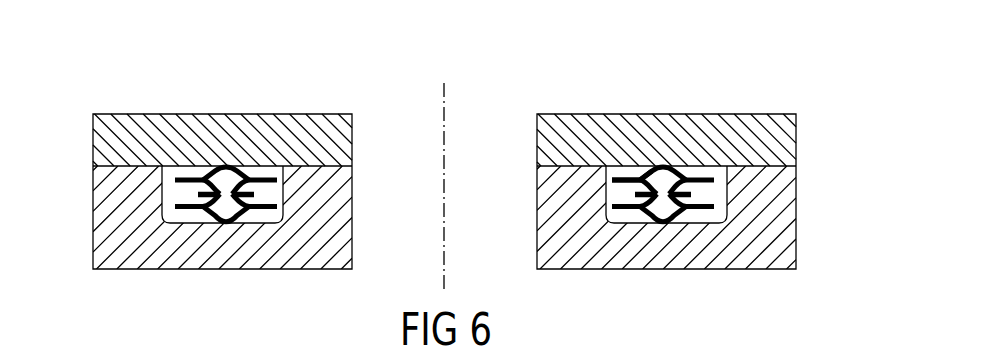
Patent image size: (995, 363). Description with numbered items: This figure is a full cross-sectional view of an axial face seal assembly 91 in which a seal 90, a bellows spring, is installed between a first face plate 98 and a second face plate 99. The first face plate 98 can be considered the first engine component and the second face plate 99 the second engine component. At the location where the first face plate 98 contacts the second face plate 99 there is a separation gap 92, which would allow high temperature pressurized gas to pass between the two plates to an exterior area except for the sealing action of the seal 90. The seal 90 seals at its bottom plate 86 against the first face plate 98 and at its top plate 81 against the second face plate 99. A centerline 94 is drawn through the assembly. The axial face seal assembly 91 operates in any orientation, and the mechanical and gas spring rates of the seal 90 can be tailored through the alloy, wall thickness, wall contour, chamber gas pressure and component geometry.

The top plate 81 is at (641, 173).
The bottom plate 86 is at (244, 216).
The seal 90 is at (249, 170).
The axial face seal assembly 91 is at (677, 91).
The separation gap 92 is at (90, 166).
The centerline 94 is at (445, 101).
The first face plate 98 is at (198, 262).
The second face plate 99 is at (225, 118).